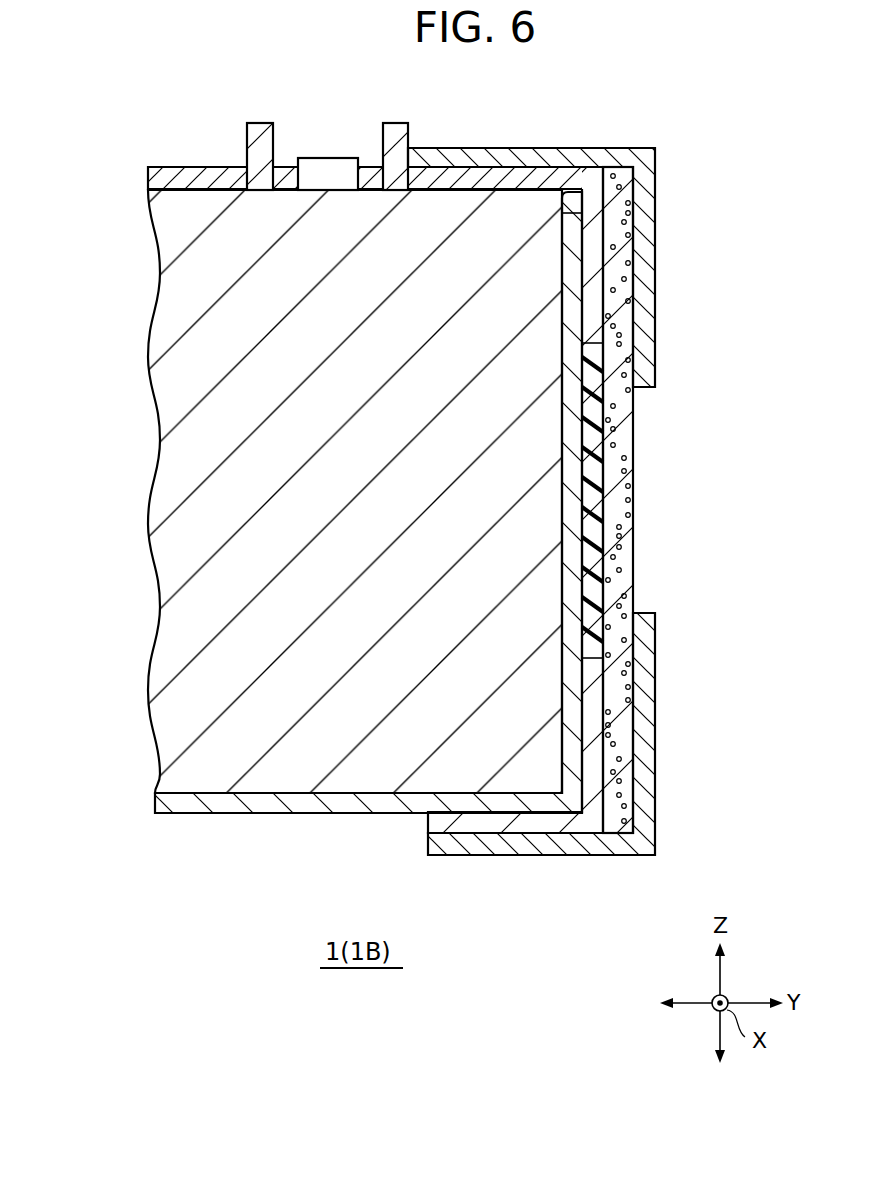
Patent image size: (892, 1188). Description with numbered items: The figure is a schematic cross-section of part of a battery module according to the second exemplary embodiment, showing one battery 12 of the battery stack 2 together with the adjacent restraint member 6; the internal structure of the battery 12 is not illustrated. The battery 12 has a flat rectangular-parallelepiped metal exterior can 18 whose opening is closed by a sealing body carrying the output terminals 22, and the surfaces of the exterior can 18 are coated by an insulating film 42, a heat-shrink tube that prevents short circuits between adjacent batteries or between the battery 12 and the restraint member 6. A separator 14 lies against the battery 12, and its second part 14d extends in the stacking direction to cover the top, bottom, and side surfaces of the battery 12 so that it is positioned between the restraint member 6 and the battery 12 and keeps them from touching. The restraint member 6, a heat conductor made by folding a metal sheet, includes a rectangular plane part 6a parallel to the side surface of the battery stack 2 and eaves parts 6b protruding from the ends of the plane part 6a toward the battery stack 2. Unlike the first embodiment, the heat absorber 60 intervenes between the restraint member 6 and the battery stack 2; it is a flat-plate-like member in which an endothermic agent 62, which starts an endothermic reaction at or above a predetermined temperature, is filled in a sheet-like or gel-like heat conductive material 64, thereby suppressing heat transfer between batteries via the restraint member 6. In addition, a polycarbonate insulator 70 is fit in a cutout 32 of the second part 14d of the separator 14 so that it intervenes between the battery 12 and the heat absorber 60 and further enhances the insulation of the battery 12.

The battery stack 2 is at (464, 163).
The restraint member 6 is at (659, 203).
The plane part 6a is at (657, 683).
The eaves part 6b is at (523, 147).
The battery 12 is at (147, 722).
The separator 14 is at (167, 164).
The second part 14d is at (597, 775).
The exterior can 18 is at (346, 814).
The output terminal 22 is at (322, 158).
The cutout 32 is at (605, 368).
The insulating film 42 is at (252, 814).
The heat absorber 60 is at (638, 533).
The endothermic agent 62 is at (623, 455).
The heat conductive material 64 is at (620, 413).
The insulator 70 is at (597, 602).